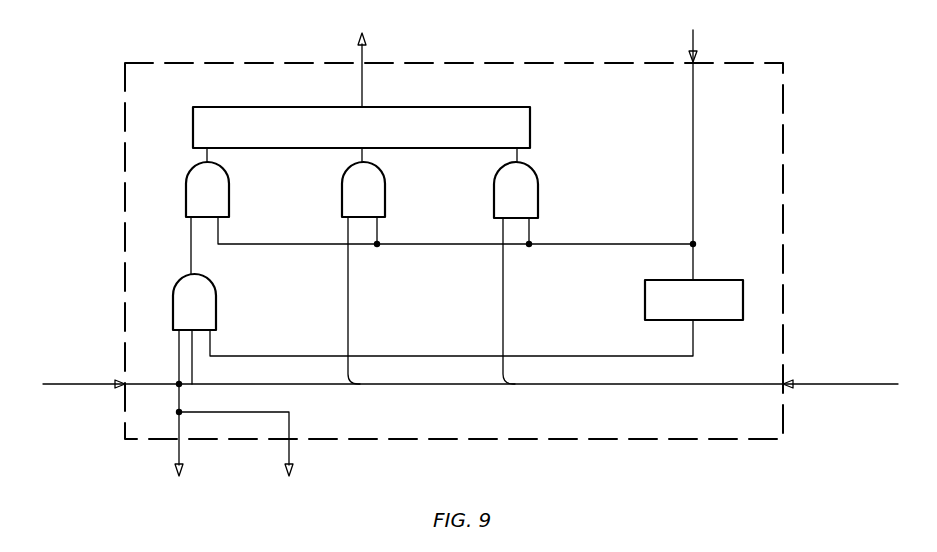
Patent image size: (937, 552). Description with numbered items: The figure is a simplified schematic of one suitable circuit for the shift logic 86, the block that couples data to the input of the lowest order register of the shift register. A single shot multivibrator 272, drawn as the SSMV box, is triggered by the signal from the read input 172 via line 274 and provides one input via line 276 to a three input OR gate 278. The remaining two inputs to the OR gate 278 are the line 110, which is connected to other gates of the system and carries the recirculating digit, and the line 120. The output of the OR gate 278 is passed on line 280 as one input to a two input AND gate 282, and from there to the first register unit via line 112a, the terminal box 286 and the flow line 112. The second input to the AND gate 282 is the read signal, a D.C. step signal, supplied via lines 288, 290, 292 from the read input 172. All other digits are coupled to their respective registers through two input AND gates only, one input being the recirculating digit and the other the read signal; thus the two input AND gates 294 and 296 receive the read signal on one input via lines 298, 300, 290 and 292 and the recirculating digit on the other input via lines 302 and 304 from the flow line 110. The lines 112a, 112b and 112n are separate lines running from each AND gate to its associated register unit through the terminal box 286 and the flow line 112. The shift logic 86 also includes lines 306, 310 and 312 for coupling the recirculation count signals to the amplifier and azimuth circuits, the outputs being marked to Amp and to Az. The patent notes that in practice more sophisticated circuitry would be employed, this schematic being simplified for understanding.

The shift logic 86 is at (786, 76).
The terminal box 286 is at (531, 118).
The flow line 112 is at (364, 54).
The read input 172 is at (694, 46).
The two input AND gate 282 is at (186, 178).
The line 112a is at (209, 157).
The two input AND gate 294 is at (342, 190).
The line 112b is at (364, 156).
The two input AND gate 296 is at (494, 188).
The line 112n is at (519, 158).
The line 280 is at (190, 247).
The line 288 is at (271, 244).
The line 298 is at (379, 233).
The line 290 is at (479, 246).
The line 300 is at (533, 237).
The line 292 is at (663, 244).
The line 274 is at (696, 266).
The single shot multivibrator 272 is at (714, 322).
The line 276 is at (655, 355).
The three input OR gate 278 is at (217, 293).
The line 302 is at (350, 287).
The line 304 is at (505, 285).
The line 120 is at (101, 382).
The line 110 is at (823, 384).
The line 306 is at (182, 397).
The line 310 is at (177, 449).
The line 312 is at (291, 448).